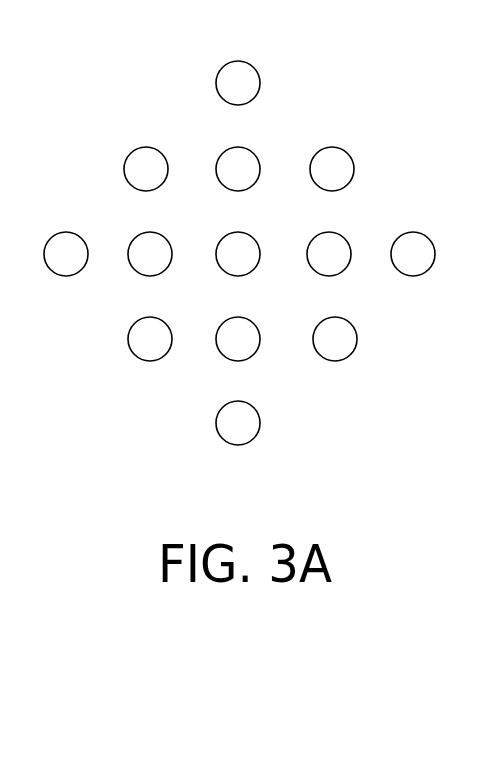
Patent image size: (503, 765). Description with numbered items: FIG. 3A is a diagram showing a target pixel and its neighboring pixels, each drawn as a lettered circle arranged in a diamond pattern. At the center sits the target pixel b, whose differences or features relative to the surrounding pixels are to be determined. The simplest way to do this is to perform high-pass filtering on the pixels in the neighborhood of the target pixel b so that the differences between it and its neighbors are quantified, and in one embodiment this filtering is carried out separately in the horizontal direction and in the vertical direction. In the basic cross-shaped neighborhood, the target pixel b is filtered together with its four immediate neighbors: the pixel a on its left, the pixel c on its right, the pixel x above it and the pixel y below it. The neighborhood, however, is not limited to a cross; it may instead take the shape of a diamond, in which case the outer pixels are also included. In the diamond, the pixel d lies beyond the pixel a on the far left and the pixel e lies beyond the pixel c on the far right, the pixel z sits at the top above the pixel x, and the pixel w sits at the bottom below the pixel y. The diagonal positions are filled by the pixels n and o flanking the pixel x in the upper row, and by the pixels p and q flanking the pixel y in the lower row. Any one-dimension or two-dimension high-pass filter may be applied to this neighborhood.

The neighboring pixel z is at (238, 83).
The neighboring pixel n is at (146, 169).
The neighboring pixel x is at (238, 169).
The neighboring pixel o is at (332, 169).
The neighboring pixel d is at (66, 254).
The neighboring pixel a is at (150, 254).
The target pixel b is at (238, 254).
The neighboring pixel c is at (329, 254).
The neighboring pixel e is at (413, 254).
The neighboring pixel p is at (150, 342).
The neighboring pixel y is at (238, 342).
The neighboring pixel q is at (335, 342).
The neighboring pixel w is at (238, 423).